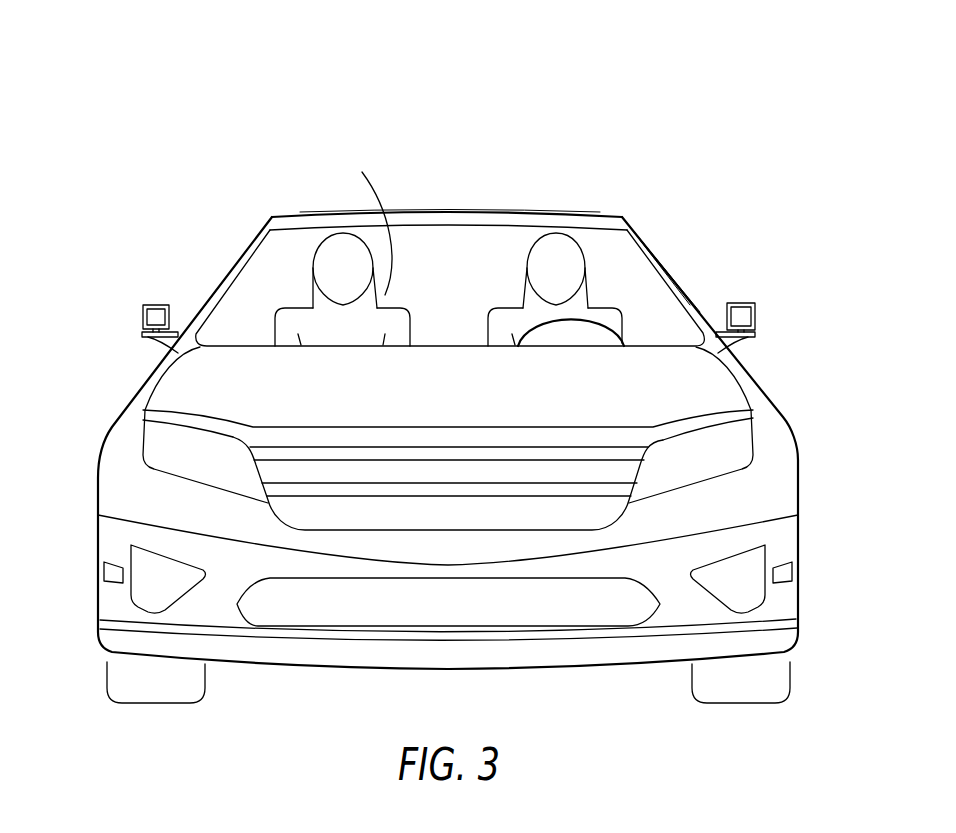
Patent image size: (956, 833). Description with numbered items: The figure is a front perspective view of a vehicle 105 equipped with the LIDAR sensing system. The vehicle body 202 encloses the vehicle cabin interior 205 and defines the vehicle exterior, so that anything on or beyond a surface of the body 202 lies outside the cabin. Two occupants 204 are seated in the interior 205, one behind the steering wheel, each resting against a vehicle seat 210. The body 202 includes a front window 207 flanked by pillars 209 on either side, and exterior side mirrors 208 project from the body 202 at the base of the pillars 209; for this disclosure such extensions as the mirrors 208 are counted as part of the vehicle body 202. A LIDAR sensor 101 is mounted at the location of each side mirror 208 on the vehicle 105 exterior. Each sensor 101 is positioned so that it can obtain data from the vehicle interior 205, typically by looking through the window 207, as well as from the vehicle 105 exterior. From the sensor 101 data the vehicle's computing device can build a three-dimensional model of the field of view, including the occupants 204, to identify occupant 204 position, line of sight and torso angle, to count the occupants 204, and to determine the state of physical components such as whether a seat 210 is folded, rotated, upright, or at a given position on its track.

The vehicle 105 is at (136, 73).
The LIDAR sensor 101 is at (153, 304).
The vehicle body 202 is at (556, 212).
The occupant 204 is at (327, 252).
The vehicle cabin interior 205 is at (470, 256).
The window 207 is at (678, 275).
The exterior side mirror 208 is at (180, 330).
The pillar 209 is at (230, 270).
The vehicle seat 210 is at (513, 300).